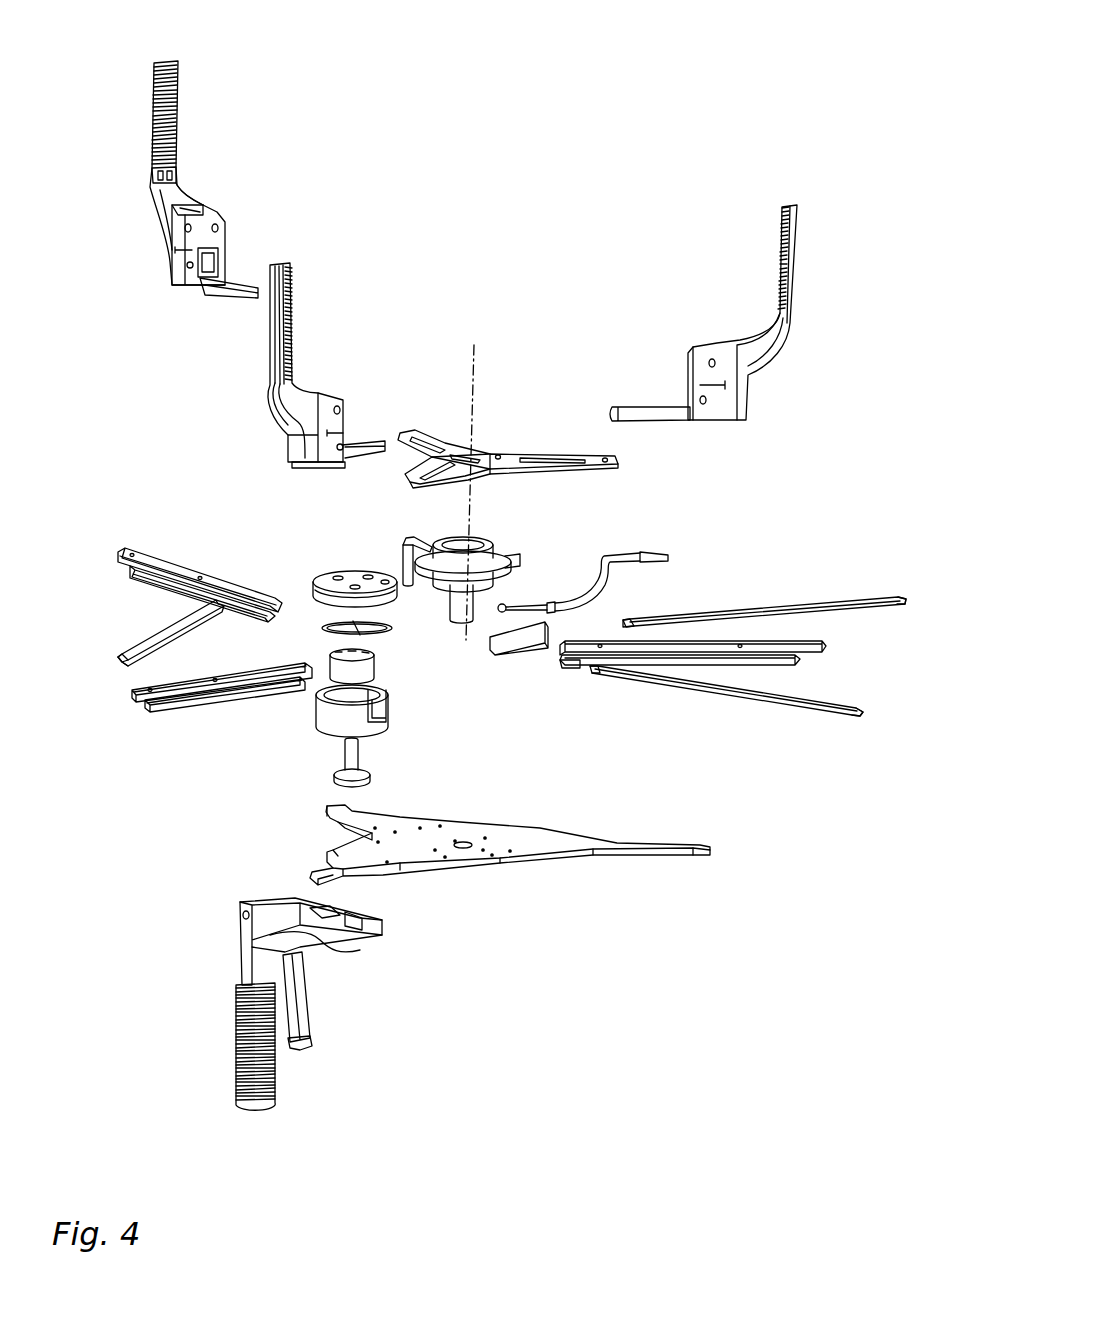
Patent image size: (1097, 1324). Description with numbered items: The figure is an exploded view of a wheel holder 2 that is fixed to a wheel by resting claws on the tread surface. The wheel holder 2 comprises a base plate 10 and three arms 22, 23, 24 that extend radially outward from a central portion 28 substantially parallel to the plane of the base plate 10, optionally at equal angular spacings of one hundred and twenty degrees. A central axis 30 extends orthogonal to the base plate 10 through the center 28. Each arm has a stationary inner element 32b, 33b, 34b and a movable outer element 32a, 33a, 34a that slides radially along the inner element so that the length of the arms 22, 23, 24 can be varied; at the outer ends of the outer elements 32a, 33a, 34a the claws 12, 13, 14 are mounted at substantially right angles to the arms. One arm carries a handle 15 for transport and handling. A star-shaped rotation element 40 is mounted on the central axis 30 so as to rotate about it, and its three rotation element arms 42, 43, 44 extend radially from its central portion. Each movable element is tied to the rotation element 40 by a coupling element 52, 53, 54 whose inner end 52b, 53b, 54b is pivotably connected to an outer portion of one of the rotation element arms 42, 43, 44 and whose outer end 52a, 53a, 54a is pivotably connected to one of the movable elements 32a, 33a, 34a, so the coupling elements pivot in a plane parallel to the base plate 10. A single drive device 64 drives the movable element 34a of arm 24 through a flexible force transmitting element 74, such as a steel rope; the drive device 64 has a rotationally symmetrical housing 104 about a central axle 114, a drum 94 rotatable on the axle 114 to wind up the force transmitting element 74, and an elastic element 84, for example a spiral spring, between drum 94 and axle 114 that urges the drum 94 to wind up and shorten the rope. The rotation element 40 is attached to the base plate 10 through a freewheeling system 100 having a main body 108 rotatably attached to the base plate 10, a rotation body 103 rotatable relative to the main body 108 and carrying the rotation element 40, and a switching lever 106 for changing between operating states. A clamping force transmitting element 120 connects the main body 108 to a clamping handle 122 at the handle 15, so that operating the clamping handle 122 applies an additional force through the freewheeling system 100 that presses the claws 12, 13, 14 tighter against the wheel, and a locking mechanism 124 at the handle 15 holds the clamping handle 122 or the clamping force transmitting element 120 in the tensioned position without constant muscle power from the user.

The wheel holder 2 is at (818, 70).
The base plate 10 is at (593, 822).
The claw 12 is at (205, 100).
The claw 13 is at (823, 202).
The claw 14 is at (312, 272).
The handle 15 is at (213, 1092).
The arm 22 is at (207, 722).
The arm 23 is at (832, 670).
The arm 24 is at (210, 545).
The central portion 28 is at (490, 812).
The central axis 30 is at (476, 350).
The movable outer element 32a is at (230, 680).
The stationary inner element 32b is at (253, 693).
The movable outer element 33a is at (826, 647).
The stationary inner element 33b is at (776, 663).
The movable outer element 34a is at (180, 568).
The stationary inner element 34b is at (150, 585).
The rotation element 40 is at (507, 425).
The rotation element arm 42 is at (430, 432).
The rotation element arm 43 is at (592, 455).
The rotation element arm 44 is at (410, 483).
The coupling element 52 is at (795, 716).
The outer end of coupling element 52a is at (845, 722).
The inner end of coupling element 52b is at (598, 682).
The coupling element 53 is at (855, 590).
The outer end of coupling element 53a is at (907, 585).
The inner end of coupling element 53b is at (642, 612).
The coupling element 54 is at (118, 645).
The outer end of coupling element 54a is at (119, 670).
The inner end of coupling element 54b is at (213, 622).
The drive device 64 is at (407, 723).
The force transmitting element 74 is at (385, 628).
The elastic element 84 is at (372, 676).
The drum 94 is at (317, 580).
The freewheeling system 100 is at (508, 528).
The rotation body 103 is at (511, 553).
The housing 104 is at (315, 740).
The switching lever 106 is at (398, 548).
The main body 108 is at (464, 622).
The axle 114 is at (330, 762).
The clamping force transmitting element 120 is at (677, 542).
The clamping handle 122 is at (300, 1048).
The locking mechanism 124 is at (326, 995).